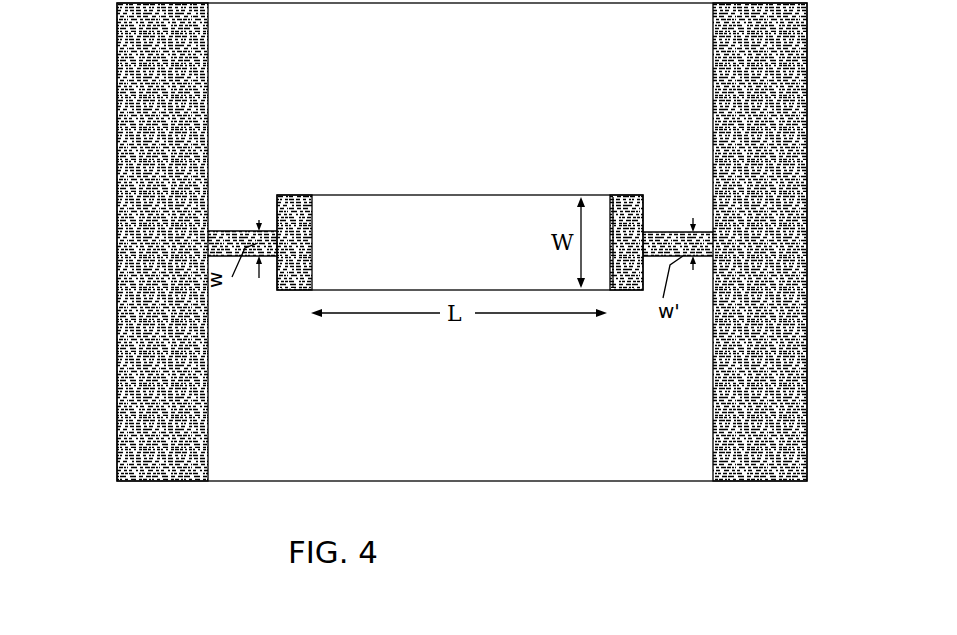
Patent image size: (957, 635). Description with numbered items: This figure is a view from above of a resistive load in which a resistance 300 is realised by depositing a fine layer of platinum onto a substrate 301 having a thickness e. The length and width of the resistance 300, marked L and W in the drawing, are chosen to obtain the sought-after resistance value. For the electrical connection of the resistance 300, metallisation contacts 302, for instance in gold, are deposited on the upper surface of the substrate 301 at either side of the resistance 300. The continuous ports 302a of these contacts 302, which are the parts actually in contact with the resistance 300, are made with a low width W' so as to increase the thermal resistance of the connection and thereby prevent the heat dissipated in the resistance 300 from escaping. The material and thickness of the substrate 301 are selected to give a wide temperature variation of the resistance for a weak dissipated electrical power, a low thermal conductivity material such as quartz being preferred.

The resistance 300 is at (429, 209).
The substrate 301 is at (602, 470).
The metallisation contacts 302 is at (132, 440).
The continuous ports 302a is at (312, 178).